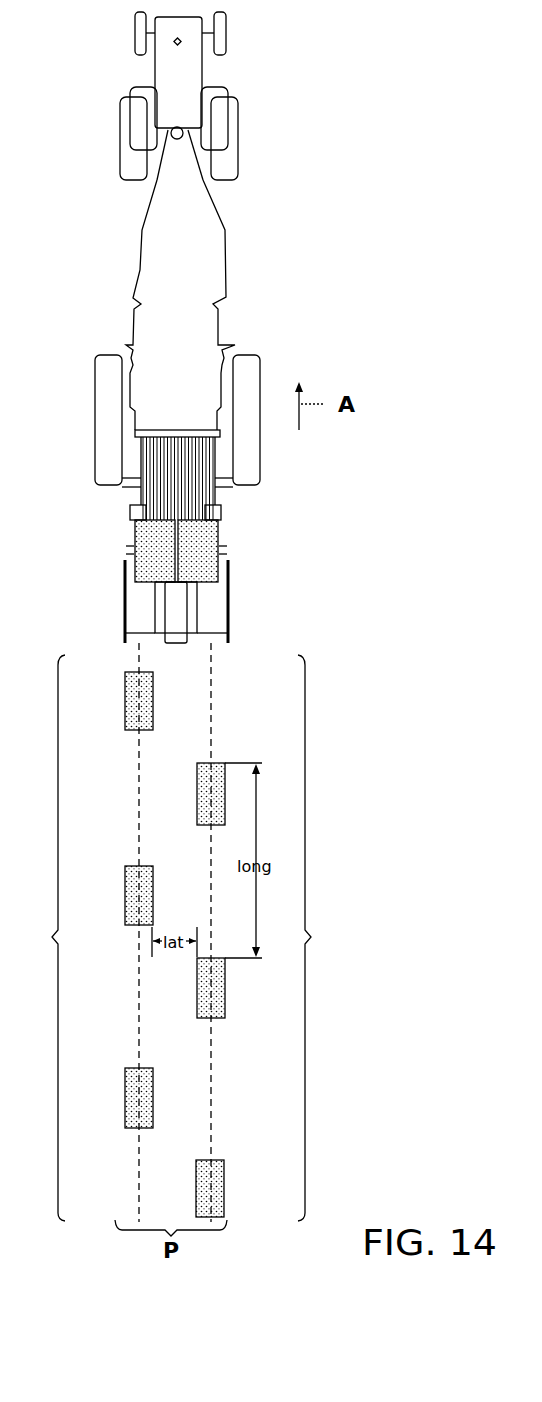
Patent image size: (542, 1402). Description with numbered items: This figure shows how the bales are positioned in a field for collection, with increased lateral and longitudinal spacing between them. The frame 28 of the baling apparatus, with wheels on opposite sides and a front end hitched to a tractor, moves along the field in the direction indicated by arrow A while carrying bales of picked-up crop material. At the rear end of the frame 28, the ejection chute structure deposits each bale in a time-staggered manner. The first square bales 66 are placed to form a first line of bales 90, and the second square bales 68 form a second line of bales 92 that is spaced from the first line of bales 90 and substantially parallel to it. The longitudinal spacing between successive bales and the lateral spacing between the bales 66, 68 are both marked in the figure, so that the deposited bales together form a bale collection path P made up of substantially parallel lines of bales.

The frame 28 is at (84, 412).
The first square bale 66 is at (130, 553).
The second square bale 68 is at (225, 553).
The first line of bales 90 is at (42, 938).
The second line of bales 92 is at (320, 938).